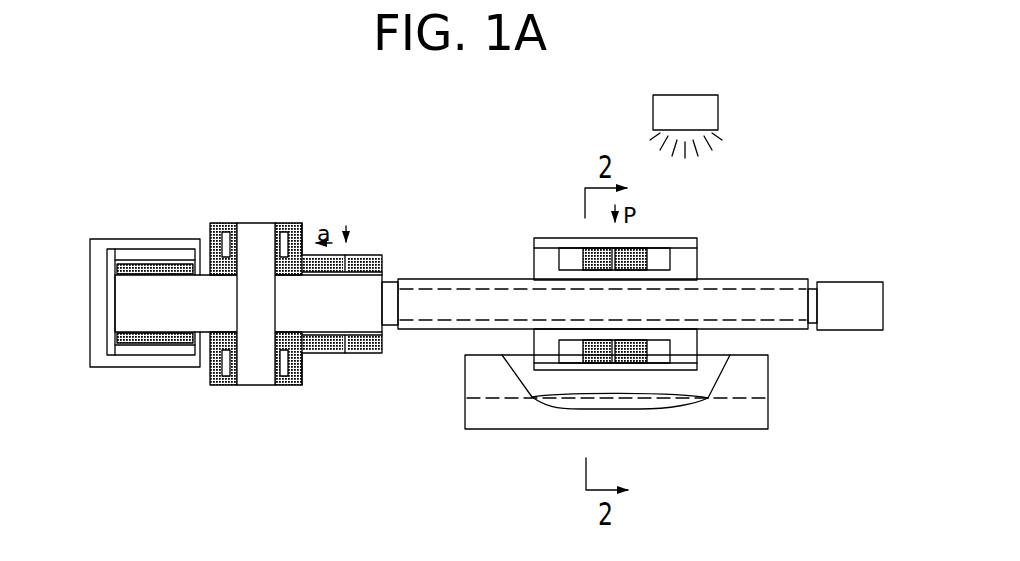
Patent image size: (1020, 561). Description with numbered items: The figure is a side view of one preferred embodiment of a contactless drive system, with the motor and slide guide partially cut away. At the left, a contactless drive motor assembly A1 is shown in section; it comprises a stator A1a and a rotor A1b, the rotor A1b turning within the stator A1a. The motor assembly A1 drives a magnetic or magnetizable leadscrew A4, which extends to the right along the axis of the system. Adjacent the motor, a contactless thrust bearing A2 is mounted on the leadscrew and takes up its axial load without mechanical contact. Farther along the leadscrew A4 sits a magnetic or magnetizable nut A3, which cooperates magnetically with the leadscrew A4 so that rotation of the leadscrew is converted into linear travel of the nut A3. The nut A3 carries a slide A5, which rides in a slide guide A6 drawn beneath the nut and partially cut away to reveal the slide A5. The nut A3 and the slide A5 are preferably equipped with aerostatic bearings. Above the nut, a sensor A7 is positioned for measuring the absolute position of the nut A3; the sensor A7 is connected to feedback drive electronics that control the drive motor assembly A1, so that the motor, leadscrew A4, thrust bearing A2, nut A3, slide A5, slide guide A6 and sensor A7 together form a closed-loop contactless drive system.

The contactless drive motor A1 is at (103, 247).
The stator A1a is at (135, 257).
The rotor A1b is at (157, 338).
The contactless thrust bearing A2 is at (302, 387).
The magnetic or magnetizable nut A3 is at (547, 265).
The magnetic or magnetizable leadscrew A4 is at (728, 293).
The slide A5 is at (668, 400).
The slide guide A6 is at (500, 415).
The sensor A7 is at (686, 126).